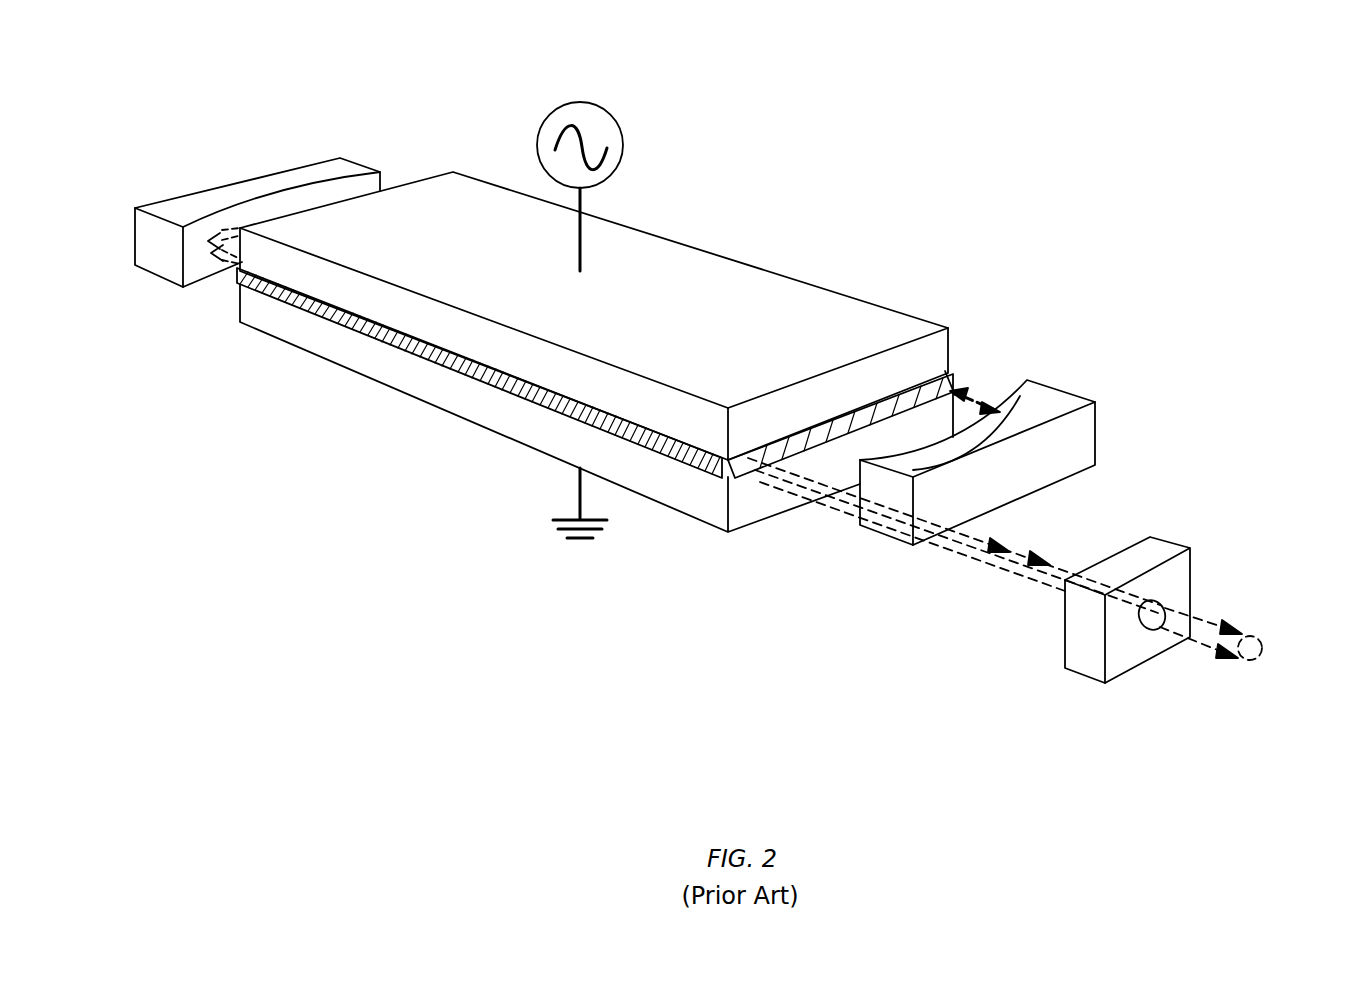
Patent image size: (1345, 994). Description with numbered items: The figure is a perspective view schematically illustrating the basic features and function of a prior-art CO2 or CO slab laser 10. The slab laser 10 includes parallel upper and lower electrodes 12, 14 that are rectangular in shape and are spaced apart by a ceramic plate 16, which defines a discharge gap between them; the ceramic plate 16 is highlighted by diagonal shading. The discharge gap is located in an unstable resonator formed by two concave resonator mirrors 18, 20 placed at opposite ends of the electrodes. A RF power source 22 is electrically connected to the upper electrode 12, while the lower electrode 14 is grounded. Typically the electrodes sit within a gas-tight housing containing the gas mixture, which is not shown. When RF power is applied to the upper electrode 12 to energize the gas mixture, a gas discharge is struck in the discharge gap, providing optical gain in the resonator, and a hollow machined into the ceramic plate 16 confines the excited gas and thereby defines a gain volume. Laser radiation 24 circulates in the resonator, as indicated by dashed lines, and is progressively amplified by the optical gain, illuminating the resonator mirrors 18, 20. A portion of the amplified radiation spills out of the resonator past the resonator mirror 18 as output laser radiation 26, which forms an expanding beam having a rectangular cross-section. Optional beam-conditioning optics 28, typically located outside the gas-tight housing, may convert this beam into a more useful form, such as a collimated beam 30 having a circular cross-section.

The slab laser 10 is at (1205, 120).
The upper electrode 12 is at (370, 300).
The lower electrode 14 is at (523, 412).
The ceramic plate 16 is at (432, 365).
The resonator mirror 18 is at (1010, 408).
The resonator mirror 20 is at (199, 268).
The RF power source 22 is at (598, 118).
The laser radiation 24 is at (225, 228).
The output laser radiation 26 is at (1007, 540).
The beam-conditioning optics 28 is at (1162, 547).
The collimated beam 30 is at (1237, 660).